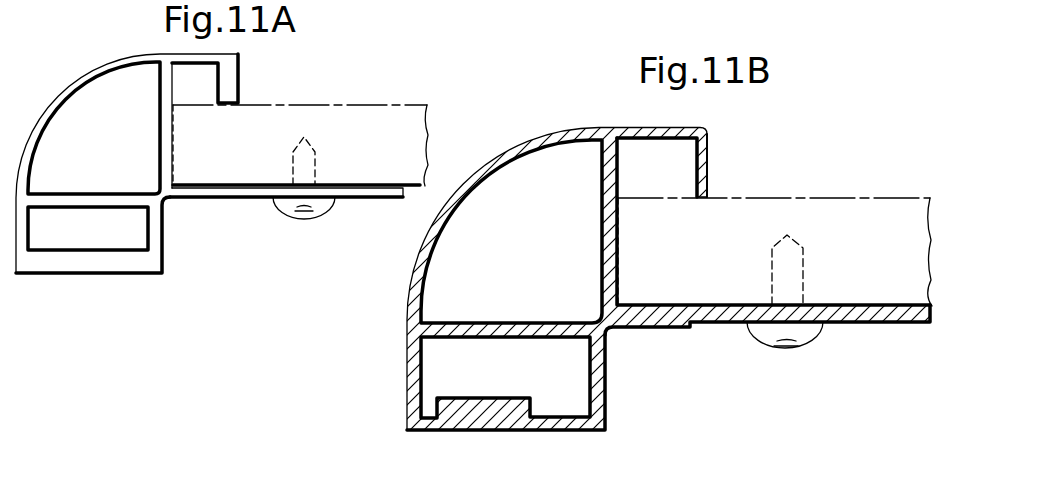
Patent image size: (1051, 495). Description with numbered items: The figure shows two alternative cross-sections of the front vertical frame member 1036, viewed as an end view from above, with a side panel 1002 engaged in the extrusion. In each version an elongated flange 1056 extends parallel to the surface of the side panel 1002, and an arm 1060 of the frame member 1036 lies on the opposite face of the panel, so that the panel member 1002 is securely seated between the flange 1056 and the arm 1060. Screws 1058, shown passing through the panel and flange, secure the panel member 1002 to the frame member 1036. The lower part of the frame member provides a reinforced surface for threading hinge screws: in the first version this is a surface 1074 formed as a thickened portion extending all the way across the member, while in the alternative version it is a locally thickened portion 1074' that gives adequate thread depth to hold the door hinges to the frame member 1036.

In FIG. 11A, the front vertical frame member 1036 is at (97, 58).
In FIG. 11B, the front vertical frame member 1036 is at (523, 133).
In FIG. 11A, the arm 1060 is at (229, 80).
In FIG. 11B, the arm 1060 is at (706, 133).
In FIG. 11A, the side panel 1002 is at (330, 128).
In FIG. 11B, the side panel 1002 is at (807, 205).
In FIG. 11A, the elongated flange 1056 is at (218, 194).
In FIG. 11B, the elongated flange 1056 is at (672, 323).
In FIG. 11A, the screw 1058 is at (317, 212).
In FIG. 11B, the screw 1058 is at (808, 333).
In FIG. 11A, the surface 1074 is at (88, 257).
In FIG. 11B, the locally thickened portion 1074' is at (483, 401).